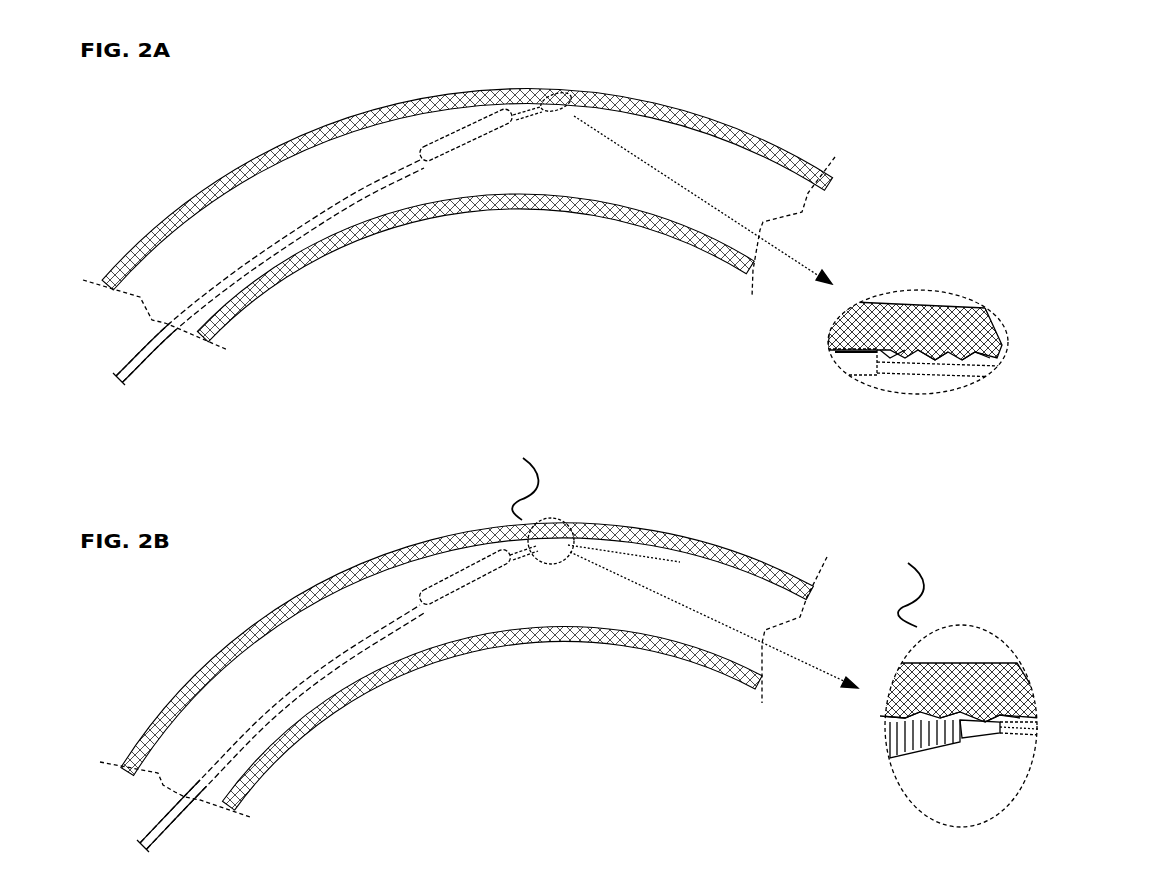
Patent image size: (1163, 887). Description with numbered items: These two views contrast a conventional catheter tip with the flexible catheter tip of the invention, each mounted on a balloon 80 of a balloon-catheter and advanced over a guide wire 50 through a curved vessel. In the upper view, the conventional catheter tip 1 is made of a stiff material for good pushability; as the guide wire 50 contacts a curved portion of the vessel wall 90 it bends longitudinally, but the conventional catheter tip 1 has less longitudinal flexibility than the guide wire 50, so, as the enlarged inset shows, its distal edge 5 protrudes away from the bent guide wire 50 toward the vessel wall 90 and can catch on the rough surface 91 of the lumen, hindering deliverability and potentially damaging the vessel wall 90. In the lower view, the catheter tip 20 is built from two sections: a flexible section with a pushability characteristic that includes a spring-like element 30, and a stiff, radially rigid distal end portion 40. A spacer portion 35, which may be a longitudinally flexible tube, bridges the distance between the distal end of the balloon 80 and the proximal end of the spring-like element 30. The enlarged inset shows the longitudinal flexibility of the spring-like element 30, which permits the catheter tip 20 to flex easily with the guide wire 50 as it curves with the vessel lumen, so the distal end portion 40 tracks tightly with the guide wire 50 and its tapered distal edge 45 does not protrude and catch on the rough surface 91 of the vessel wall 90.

In FIG. 2A, the conventional catheter tip 1 is at (527, 117).
In FIG. 2A, the distal edge 5 is at (875, 357).
In FIG. 2B, the catheter tip 20 is at (713, 527).
In FIG. 2B, the spring-like element 30 is at (533, 548).
In FIG. 2B, the spacer portion 35 is at (521, 556).
In FIG. 2B, the distal end portion 40 is at (992, 726).
In FIG. 2B, the distal edge 45 is at (1010, 733).
In FIG. 2A, the guide wire 50 is at (630, 103).
In FIG. 2B, the guide wire 50 is at (642, 550).
In FIG. 2A, the balloon 80 is at (463, 140).
In FIG. 2B, the balloon 80 is at (462, 577).
In FIG. 2A, the vessel wall 90 is at (650, 227).
In FIG. 2B, the vessel wall 90 is at (670, 650).
In FIG. 2A, the rough surface 91 is at (960, 360).
In FIG. 2B, the rough surface 91 is at (1007, 715).